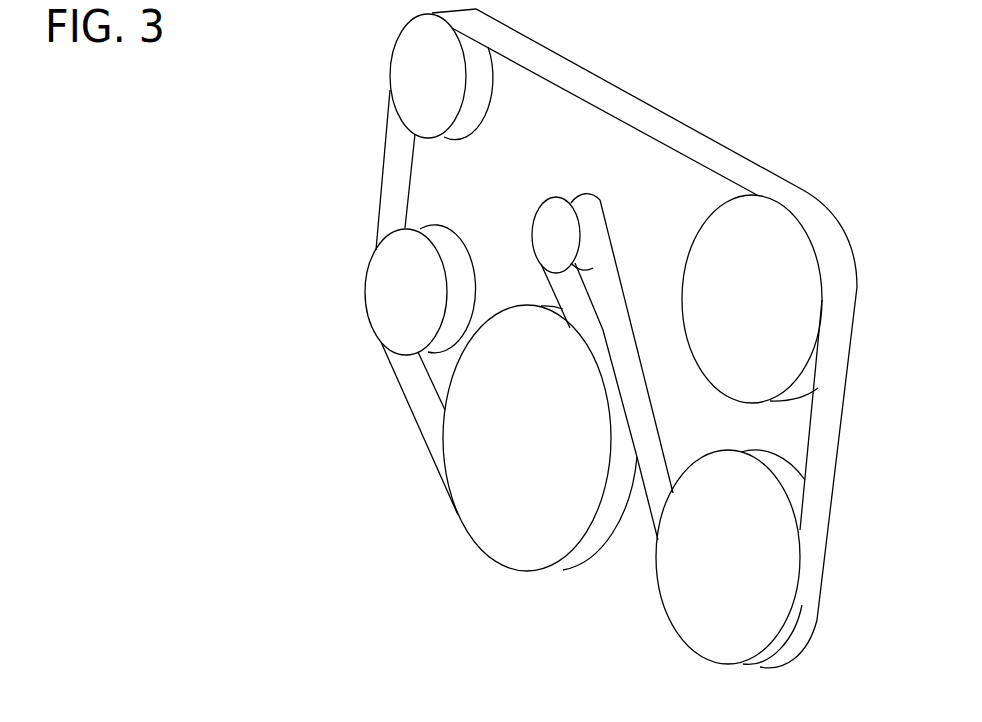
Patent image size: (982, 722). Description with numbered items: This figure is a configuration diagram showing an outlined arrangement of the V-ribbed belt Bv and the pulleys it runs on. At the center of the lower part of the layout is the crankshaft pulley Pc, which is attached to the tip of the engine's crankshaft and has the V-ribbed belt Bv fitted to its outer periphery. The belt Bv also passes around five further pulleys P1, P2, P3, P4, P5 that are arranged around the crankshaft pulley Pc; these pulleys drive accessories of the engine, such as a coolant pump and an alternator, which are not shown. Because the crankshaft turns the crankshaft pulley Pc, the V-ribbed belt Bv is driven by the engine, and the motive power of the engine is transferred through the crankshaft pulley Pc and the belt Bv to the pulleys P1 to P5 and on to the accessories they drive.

The pulley P1 is at (392, 52).
The pulley P2 is at (368, 277).
The pulley P3 is at (535, 207).
The pulley P4 is at (670, 617).
The pulley P5 is at (705, 225).
The crankshaft pulley Pc is at (460, 512).
The V-ribbed belt Bv is at (742, 155).